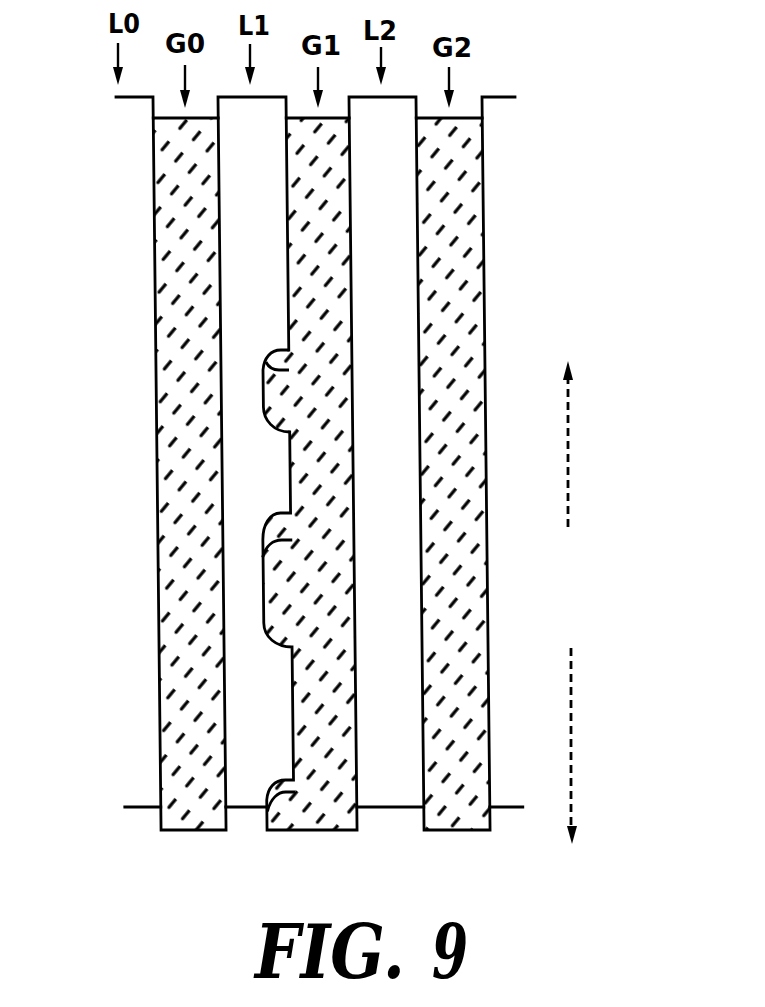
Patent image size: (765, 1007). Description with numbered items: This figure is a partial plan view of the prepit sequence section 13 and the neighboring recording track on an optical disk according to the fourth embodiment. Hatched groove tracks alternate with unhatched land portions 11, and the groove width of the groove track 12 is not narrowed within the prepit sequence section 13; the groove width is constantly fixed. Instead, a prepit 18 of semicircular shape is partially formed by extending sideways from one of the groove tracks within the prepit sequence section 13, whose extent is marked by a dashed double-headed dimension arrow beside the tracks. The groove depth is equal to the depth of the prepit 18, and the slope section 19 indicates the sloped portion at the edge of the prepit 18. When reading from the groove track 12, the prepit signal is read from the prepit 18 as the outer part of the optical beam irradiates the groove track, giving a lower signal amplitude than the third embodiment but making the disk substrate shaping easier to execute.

The line portion 11 is at (373, 213).
The groove track 12 is at (318, 318).
The prepit sequence section 13 is at (572, 602).
The prepit 18 is at (267, 410).
The slope section 19 is at (262, 366).